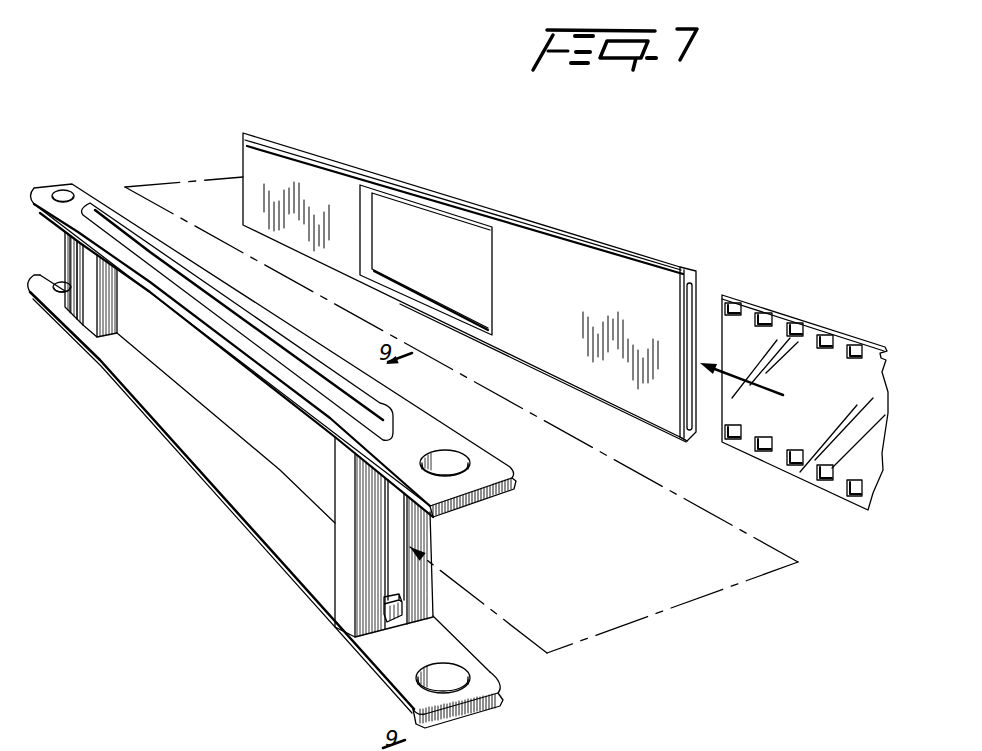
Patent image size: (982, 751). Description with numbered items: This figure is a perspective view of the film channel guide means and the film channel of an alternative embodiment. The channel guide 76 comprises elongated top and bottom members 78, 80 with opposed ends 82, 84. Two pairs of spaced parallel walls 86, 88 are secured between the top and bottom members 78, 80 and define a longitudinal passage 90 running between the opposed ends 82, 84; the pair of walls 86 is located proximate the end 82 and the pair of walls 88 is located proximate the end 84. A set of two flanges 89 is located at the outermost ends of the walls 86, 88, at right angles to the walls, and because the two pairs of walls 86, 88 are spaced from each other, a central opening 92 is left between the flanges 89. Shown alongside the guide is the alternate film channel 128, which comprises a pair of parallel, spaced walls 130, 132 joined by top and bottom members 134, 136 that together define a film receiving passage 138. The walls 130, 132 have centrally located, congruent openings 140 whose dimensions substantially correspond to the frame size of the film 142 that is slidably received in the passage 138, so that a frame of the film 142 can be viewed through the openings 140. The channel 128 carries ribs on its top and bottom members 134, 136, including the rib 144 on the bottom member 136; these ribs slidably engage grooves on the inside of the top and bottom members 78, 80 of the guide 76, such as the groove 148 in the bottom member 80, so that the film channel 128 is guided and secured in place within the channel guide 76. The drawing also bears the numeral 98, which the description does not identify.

The channel guide 76 is at (304, 433).
The top member 78 is at (352, 416).
The bottom member 80 is at (293, 570).
The end 82 is at (52, 188).
The end 84 is at (482, 710).
The pair of spaced parallel walls 86 is at (90, 312).
The pair of spaced parallel walls 88 is at (350, 608).
The flanges 89 is at (70, 308).
The longitudinal passage 90 is at (398, 522).
The central opening 92 is at (208, 373).
The lower plate edge 98 is at (282, 744).
The film channel 128 is at (550, 320).
The wall 130 is at (663, 387).
The wall 132 is at (700, 287).
The top member 134 is at (490, 210).
The bottom member 136 is at (540, 364).
The film receiving passage 138 is at (700, 296).
The openings 140 is at (418, 222).
The film 142 is at (700, 272).
The rib 144 is at (688, 440).
The groove 148 is at (437, 609).